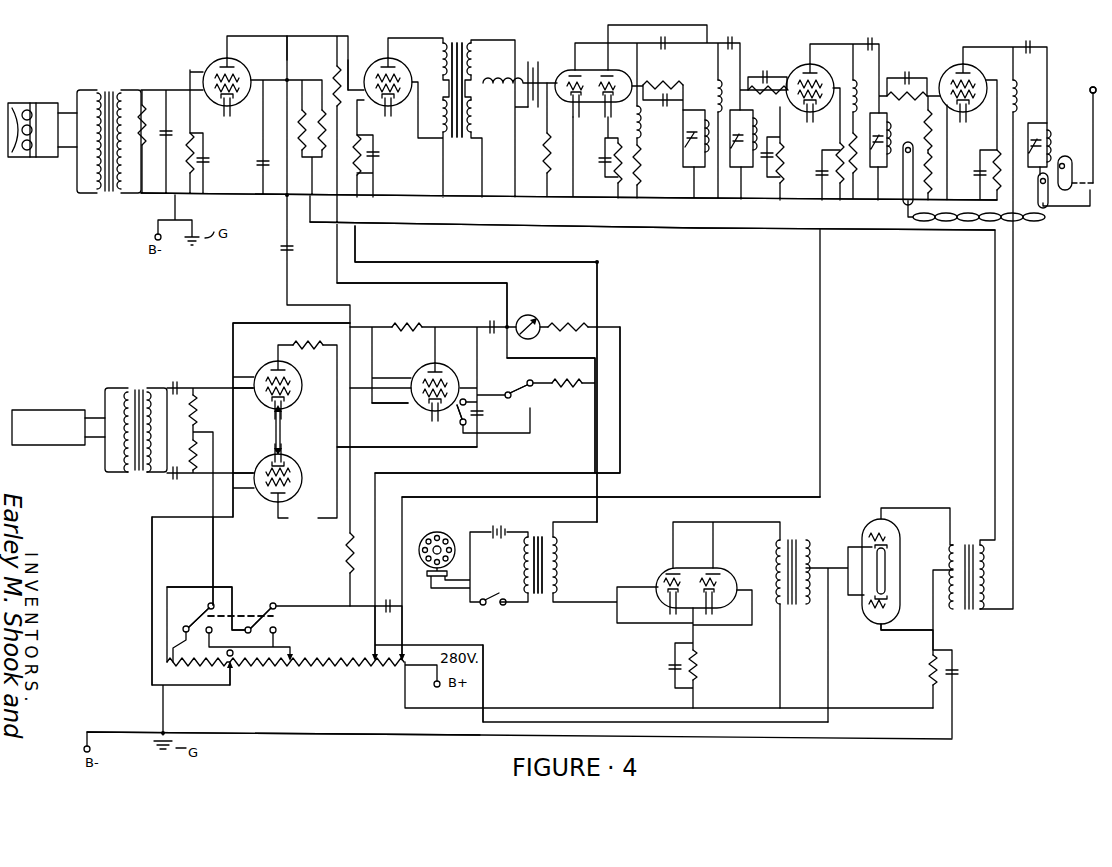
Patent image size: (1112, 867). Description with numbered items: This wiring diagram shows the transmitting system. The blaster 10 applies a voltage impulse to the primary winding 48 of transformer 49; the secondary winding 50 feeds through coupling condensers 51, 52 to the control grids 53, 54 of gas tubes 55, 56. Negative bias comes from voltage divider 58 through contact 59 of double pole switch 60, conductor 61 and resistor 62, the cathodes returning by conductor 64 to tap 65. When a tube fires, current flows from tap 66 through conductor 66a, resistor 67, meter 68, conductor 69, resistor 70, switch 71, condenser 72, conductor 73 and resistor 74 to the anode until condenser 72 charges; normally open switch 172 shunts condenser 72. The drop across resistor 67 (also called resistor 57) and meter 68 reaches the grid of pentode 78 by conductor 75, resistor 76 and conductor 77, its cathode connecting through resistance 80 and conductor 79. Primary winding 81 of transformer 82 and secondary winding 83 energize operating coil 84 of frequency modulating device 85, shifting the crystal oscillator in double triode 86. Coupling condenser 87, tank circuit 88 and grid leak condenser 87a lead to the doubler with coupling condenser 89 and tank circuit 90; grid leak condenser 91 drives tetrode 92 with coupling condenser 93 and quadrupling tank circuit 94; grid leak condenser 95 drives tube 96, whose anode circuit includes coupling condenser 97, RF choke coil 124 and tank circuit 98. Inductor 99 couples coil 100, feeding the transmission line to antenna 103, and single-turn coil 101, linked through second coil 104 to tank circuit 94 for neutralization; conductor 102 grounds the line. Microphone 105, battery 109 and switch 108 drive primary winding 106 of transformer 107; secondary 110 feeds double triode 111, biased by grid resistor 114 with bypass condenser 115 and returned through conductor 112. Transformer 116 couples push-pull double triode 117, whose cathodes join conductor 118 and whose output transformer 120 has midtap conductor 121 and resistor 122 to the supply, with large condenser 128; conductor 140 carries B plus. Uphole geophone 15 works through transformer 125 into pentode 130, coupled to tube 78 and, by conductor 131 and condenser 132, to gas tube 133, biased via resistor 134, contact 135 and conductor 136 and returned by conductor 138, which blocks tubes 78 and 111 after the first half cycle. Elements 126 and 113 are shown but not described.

The uphole geophone 15 is at (14, 103).
The transformer 125 is at (108, 89).
The pentode amplifying tube 130 is at (243, 64).
The conductor 131 is at (288, 37).
The condenser 132 is at (281, 250).
The conductor 77 is at (357, 55).
The resistor 76 is at (340, 90).
The thermionic pentode amplifying tube 78 is at (400, 65).
The resistance 80 is at (357, 146).
The primary winding 81 is at (443, 42).
The transformer 82 is at (457, 44).
The secondary winding 83 is at (476, 53).
The operating coil 84 is at (520, 94).
The frequency modulating device 85 is at (534, 62).
The double triode thermionic tube 86 is at (590, 70).
The coupling condenser 87 is at (663, 47).
The grid leak condenser 87a is at (665, 103).
The tank circuit 88 is at (683, 145).
The coupling condenser 89 is at (731, 46).
The tank circuit 90 is at (744, 158).
The grid leak condenser 91 is at (758, 76).
The tetrode tube 92 is at (815, 68).
The coupling condenser 93 is at (870, 43).
The tank circuit 94 is at (884, 155).
The grid leak condenser 95 is at (907, 78).
The thermionic tube 96 is at (966, 68).
The coupling condenser 97 is at (1032, 45).
The RF choke coil 124 is at (1017, 88).
The tank circuit 98 is at (1037, 122).
The inductor 99 is at (1050, 143).
The coil 100 is at (1059, 166).
The coil 101 is at (1049, 190).
The conductor 102 is at (578, 200).
The radiating antenna 103 is at (1093, 87).
The second coil 104 is at (906, 144).
The resistor 126 is at (993, 155).
The transformer 107 is at (979, 175).
The conductor 140 is at (695, 231).
The conductor 79 is at (497, 263).
The conductor 75 is at (418, 286).
The meter 68 is at (528, 315).
The resistor 67 is at (565, 326).
The conductor 69 is at (548, 358).
The resistor 70 is at (557, 383).
The switch 71 is at (527, 383).
The condenser 72 is at (483, 413).
The conductor 73 is at (387, 447).
The gas tube 133 is at (425, 357).
The conductor 138 is at (402, 412).
The normally open switch 172 is at (458, 425).
The conductor 66a is at (622, 403).
The conductor 64 is at (233, 333).
The resistor 74 is at (296, 345).
The gas tube 55 is at (300, 372).
The control grid 53 is at (303, 388).
The gas tube 56 is at (294, 457).
The control grid 54 is at (303, 478).
The transformer 49 is at (138, 388).
The primary winding 48 is at (117, 452).
The secondary winding 50 is at (160, 437).
The blaster 10 is at (40, 408).
The coupling condenser 51 is at (175, 383).
The coupling condenser 52 is at (182, 480).
The resistor 62 is at (198, 413).
The conductor 61 is at (211, 555).
The conductor 136 is at (185, 587).
The contact 59 is at (208, 606).
The resistor 57 is at (179, 632).
The double pole switch 60 is at (251, 610).
The contact 135 is at (277, 617).
The resistor 134 is at (347, 550).
The tap 65 is at (234, 681).
The voltage divider 58 is at (325, 668).
The tap 66 is at (370, 656).
The conductor 113 is at (345, 728).
The conductor 112 is at (485, 692).
The microphone 105 is at (438, 533).
The battery 109 is at (502, 524).
The normally open switch 108 is at (492, 608).
The primary winding 106 is at (520, 552).
The secondary winding 110 is at (560, 568).
The double triode tube 111 is at (720, 570).
The bypass condenser 115 is at (671, 663).
The grid biasing resistor 114 is at (697, 663).
The transformer 116 is at (788, 538).
The conductor 118 is at (825, 566).
The double triode tube 117 is at (903, 556).
The transformer 120 is at (970, 615).
The conductor 121 is at (932, 644).
The resistor 122 is at (927, 672).
The condenser 128 is at (962, 678).